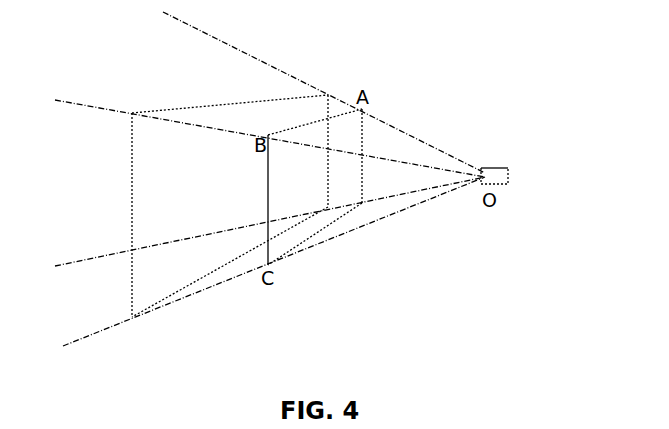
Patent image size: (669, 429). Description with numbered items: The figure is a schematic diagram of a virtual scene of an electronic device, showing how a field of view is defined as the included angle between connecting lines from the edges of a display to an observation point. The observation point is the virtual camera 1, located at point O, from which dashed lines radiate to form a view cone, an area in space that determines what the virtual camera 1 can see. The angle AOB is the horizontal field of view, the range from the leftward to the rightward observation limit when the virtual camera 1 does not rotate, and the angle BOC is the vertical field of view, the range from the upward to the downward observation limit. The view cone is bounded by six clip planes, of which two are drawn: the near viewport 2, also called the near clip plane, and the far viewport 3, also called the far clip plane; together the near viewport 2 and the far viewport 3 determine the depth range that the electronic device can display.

The virtual camera 1 is at (508, 173).
The near viewport 2 is at (355, 138).
The far viewport 3 is at (167, 279).